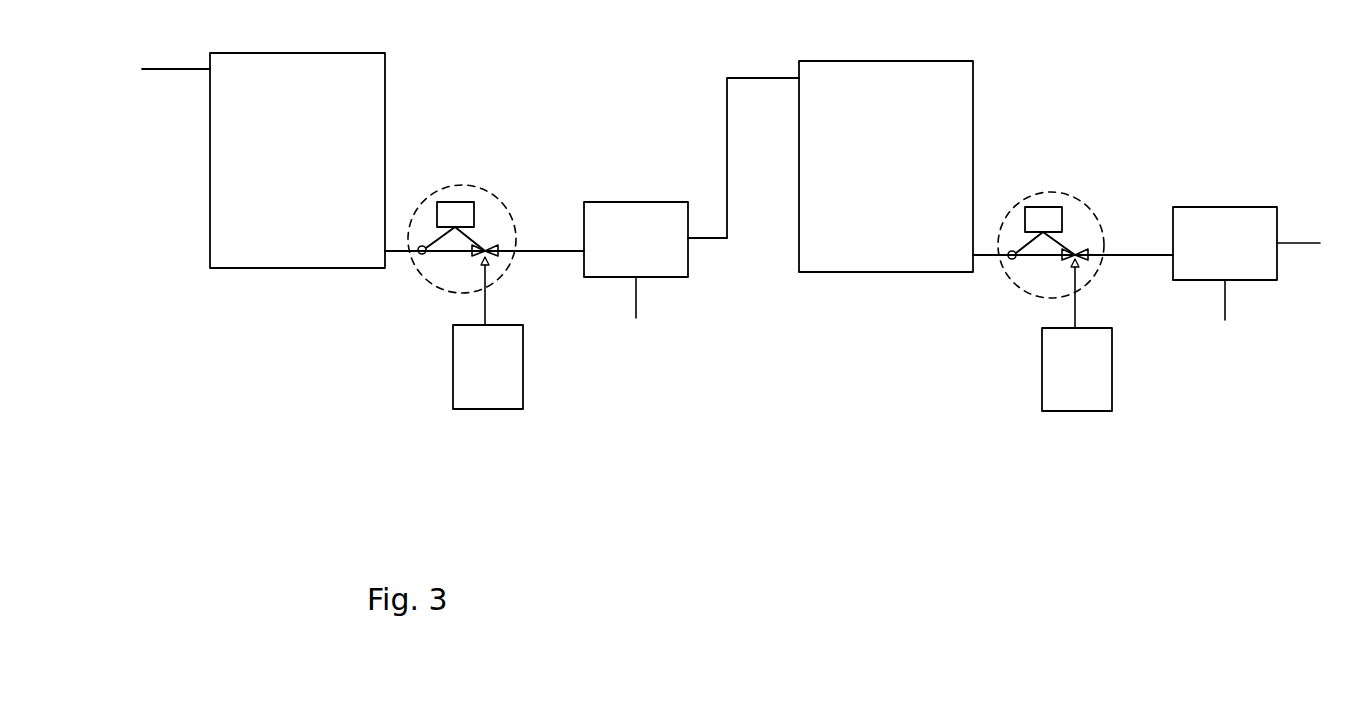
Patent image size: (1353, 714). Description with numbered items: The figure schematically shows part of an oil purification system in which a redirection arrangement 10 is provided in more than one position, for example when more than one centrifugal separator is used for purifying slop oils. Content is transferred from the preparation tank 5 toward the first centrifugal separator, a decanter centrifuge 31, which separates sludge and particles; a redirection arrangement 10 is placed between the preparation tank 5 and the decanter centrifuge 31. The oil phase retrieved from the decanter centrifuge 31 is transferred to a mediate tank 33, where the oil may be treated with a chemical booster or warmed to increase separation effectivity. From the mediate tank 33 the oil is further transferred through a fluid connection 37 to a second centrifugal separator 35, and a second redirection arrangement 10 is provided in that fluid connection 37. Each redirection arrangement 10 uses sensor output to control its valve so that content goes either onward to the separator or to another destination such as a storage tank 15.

The preparation tank 5 is at (385, 69).
The redirection arrangement 10 is at (498, 198).
The storage tank 15 is at (523, 368).
The decanter centrifuge 31 is at (660, 202).
The mediate tank 33 is at (973, 73).
The second centrifugal separator 35 is at (1247, 207).
The fluid connection 37 is at (1127, 255).